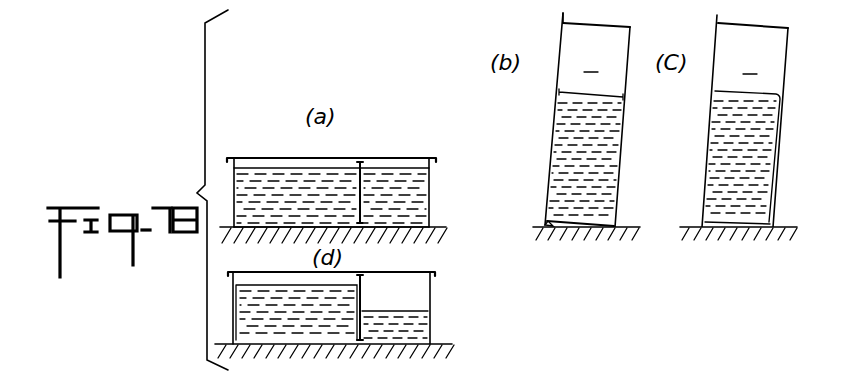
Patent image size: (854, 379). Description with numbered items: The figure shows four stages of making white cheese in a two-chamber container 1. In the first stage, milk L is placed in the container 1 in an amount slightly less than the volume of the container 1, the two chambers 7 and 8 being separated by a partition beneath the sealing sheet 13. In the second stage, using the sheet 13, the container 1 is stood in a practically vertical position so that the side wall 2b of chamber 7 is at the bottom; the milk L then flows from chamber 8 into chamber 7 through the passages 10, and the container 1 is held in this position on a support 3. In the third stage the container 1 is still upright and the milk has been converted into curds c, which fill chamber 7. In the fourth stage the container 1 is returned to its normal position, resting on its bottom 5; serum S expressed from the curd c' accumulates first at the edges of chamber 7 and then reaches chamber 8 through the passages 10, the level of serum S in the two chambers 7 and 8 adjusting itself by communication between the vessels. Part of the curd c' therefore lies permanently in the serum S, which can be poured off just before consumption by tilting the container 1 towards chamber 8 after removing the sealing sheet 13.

The container 1 is at (431, 178).
The bottom 5 is at (405, 227).
The chamber 7 is at (267, 160).
The chamber 8 is at (410, 160).
The passages 10 is at (625, 95).
The sheet 13 is at (372, 158).
The side wall 2b is at (566, 24).
The support / pivot 3 is at (548, 228).
The milk L is at (575, 150).
The serum S is at (405, 330).
The curds c is at (699, 174).
The curd c' is at (240, 317).